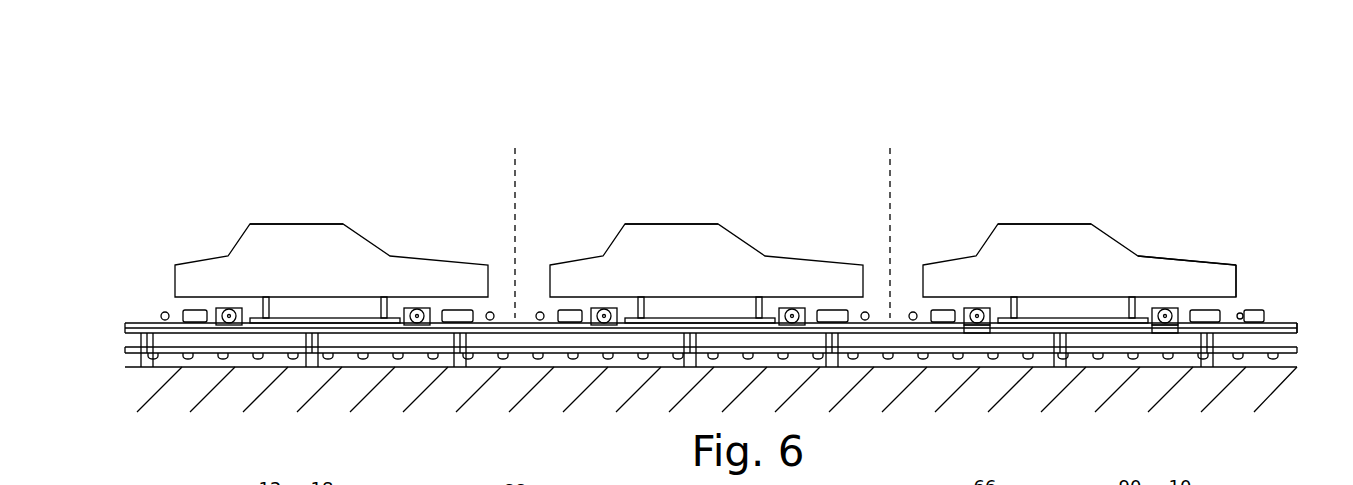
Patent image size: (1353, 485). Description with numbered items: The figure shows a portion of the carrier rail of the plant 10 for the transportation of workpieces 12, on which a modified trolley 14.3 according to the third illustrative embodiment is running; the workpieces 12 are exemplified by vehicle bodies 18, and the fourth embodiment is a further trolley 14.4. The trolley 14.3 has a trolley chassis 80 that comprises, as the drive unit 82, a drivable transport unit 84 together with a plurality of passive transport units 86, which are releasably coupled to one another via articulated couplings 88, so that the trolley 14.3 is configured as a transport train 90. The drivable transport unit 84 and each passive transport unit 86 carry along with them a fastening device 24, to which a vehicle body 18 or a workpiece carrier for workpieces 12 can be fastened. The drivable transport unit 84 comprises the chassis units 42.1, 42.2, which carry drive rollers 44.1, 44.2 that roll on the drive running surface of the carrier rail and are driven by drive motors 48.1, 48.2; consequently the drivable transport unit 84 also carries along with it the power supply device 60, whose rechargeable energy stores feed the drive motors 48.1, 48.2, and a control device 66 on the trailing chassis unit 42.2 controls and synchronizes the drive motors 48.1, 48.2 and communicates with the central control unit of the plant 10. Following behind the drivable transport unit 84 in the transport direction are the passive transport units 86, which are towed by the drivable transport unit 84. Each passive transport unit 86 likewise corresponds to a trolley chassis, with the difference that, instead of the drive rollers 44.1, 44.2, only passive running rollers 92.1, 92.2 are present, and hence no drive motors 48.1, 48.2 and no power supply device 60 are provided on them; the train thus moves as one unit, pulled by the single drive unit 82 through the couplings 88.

The plant 10 is at (1160, 116).
The workpiece 12 is at (272, 222).
The trolley 14.3 is at (965, 182).
The trolley 14.4 is at (1093, 396).
The vehicle body 18 is at (300, 240).
The fastening device 24 is at (323, 316).
The chassis unit 42.1 is at (1198, 303).
The chassis unit 42.2 is at (968, 293).
The drive roller 44.1 is at (1163, 307).
The drive roller 44.2 is at (980, 307).
The drive motor 48.1 is at (1183, 327).
The drive motor 48.2 is at (1000, 317).
The power supply device 60 is at (1245, 288).
The control device 66 is at (933, 313).
The trolley chassis 80 is at (1270, 299).
The drive unit 82 is at (1080, 338).
The drivable transport unit 84 is at (1130, 333).
The passive transport unit 86 is at (283, 337).
The articulated coupling 88 is at (520, 320).
The transport train 90 is at (1253, 197).
The passive running roller 92.1 is at (415, 308).
The passive running roller 92.2 is at (232, 308).